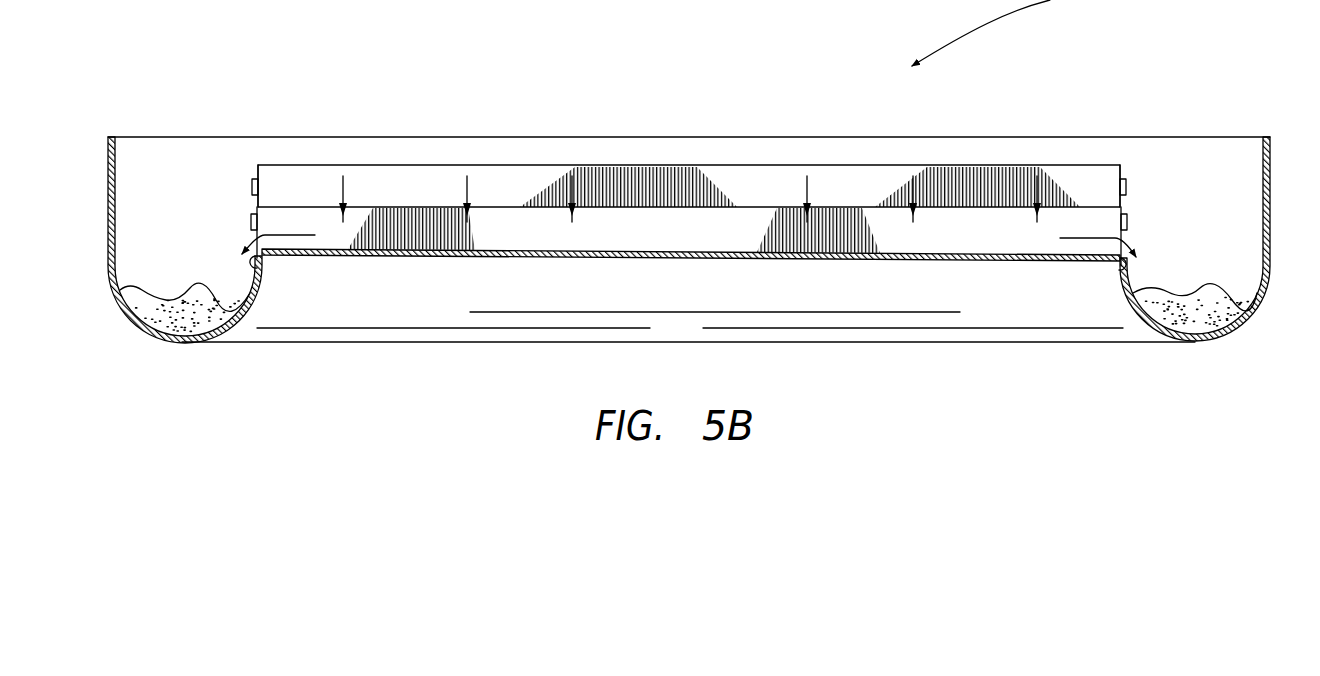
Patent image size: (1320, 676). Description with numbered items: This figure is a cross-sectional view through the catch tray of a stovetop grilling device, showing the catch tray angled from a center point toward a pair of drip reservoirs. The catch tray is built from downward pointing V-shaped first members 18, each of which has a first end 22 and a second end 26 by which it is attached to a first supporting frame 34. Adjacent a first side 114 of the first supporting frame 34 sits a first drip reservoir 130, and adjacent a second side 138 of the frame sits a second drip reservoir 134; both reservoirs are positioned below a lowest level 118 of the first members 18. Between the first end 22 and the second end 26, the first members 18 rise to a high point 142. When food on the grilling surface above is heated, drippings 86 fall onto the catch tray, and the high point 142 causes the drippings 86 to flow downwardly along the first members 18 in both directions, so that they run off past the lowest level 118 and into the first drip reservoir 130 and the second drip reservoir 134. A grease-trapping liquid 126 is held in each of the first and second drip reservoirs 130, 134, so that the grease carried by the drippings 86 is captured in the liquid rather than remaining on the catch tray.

The first member 18 is at (412, 217).
The first end 22 is at (255, 203).
The second end 26 is at (1127, 208).
The first supporting frame 34 is at (255, 212).
The drippings 86 is at (295, 233).
The first side 114 is at (255, 231).
The lowest level 118 is at (250, 283).
The grease-trapping liquid 126 is at (182, 322).
The first drip reservoir 130 is at (125, 273).
The second drip reservoir 134 is at (1253, 253).
The second side 138 is at (1130, 228).
The high point 142 is at (688, 247).